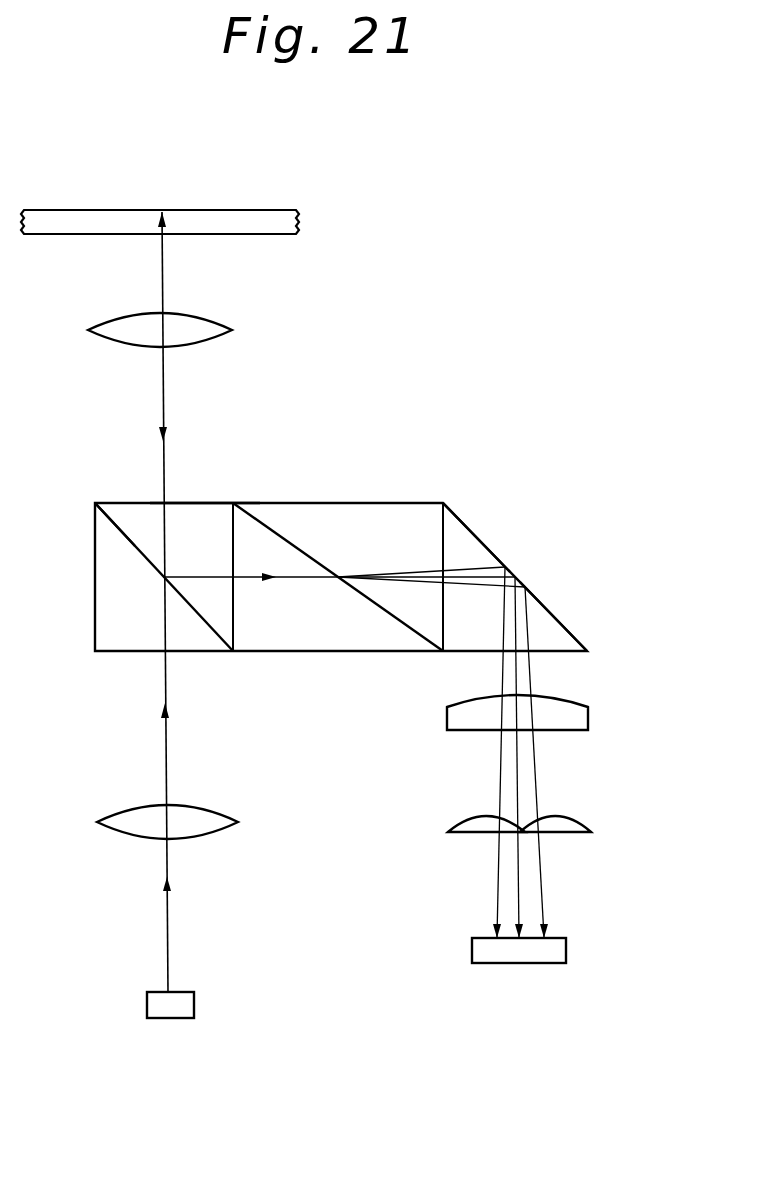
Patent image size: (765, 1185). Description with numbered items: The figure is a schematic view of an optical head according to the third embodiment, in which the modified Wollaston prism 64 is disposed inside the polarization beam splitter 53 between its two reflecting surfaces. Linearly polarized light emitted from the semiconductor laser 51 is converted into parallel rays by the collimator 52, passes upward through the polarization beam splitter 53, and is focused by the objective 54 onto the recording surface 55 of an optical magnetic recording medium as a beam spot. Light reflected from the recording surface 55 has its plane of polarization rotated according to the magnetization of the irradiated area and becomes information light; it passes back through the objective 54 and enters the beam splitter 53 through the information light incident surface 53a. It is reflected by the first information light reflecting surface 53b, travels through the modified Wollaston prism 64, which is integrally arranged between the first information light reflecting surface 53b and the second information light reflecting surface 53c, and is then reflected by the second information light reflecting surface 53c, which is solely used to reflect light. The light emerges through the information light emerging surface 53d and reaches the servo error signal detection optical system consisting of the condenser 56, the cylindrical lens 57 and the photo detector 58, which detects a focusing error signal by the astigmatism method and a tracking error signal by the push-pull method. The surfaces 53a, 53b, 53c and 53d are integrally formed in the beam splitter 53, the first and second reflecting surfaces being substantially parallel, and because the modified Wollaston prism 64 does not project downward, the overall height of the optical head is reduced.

The semiconductor laser 51 is at (150, 1006).
The collimator 52 is at (118, 818).
The polarization beam splitter 53 is at (90, 539).
The information light incident surface 53a is at (197, 502).
The first information light reflecting surface 53b is at (118, 516).
The second information light reflecting surface 53c is at (465, 530).
The information light emerging surface 53d is at (562, 647).
The objective 54 is at (108, 325).
The recording surface 55 is at (122, 208).
The condenser 56 is at (581, 721).
The cylindrical lens 57 is at (572, 827).
The photo detector 58 is at (555, 952).
The modified Wollaston prism 64 is at (347, 498).